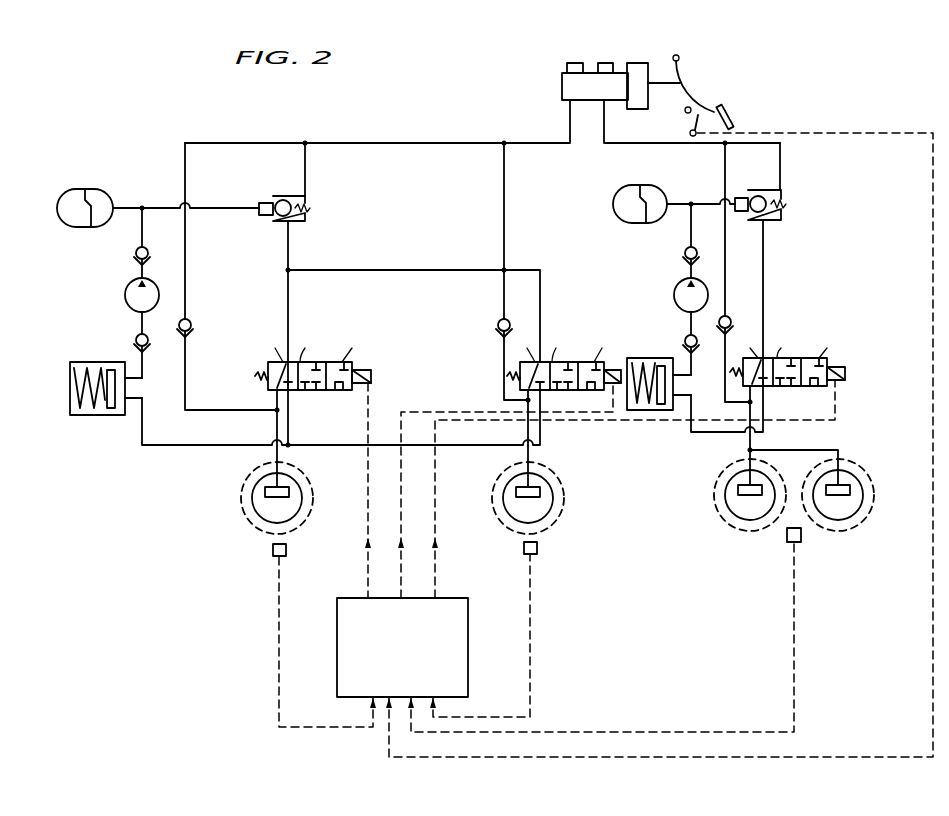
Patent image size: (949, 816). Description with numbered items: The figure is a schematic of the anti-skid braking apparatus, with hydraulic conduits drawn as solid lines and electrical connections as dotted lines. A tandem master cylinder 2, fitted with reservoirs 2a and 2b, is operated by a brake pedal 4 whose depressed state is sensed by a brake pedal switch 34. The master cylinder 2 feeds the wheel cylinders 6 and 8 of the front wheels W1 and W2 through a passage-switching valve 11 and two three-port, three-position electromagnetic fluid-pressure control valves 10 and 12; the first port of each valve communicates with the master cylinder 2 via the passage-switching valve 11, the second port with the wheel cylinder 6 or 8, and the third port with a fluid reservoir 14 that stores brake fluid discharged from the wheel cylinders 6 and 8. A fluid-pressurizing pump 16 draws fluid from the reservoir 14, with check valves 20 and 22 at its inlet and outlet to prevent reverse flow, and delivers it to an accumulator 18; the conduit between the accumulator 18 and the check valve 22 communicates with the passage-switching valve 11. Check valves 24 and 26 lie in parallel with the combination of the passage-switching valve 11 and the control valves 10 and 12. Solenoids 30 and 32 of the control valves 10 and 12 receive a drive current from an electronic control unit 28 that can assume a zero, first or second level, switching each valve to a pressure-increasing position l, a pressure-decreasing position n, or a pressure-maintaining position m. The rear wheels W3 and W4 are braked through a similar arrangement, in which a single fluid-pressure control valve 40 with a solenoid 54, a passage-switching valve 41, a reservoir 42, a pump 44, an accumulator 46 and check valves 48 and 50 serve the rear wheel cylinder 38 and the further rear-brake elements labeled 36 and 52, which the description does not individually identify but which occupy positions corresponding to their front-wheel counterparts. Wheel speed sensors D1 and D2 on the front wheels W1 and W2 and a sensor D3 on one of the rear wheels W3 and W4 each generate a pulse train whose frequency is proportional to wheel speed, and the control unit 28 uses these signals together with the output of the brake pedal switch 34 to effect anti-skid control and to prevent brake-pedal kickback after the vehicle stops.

The master cylinder 2 is at (592, 60).
The reservoir 2a is at (562, 68).
The reservoir 2b is at (608, 63).
The brake pedal 4 is at (735, 108).
The wheel cylinder 6 is at (290, 492).
The wheel cylinder 8 is at (550, 478).
The fluid-pressure control valve 10 is at (333, 348).
The passage-switching valve 11 is at (309, 208).
The fluid-pressure control valve 12 is at (577, 348).
The fluid reservoir 14 is at (102, 416).
The fluid-pressurizing pump 16 is at (125, 296).
The accumulator 18 is at (73, 189).
The check valve 20 is at (136, 340).
The check valve 22 is at (135, 253).
The check valve 24 is at (190, 322).
The check valve 26 is at (500, 320).
The electronic control unit 28 is at (337, 648).
The solenoid 30 is at (372, 376).
The solenoid 32 is at (613, 368).
The brake pedal switch 34 is at (686, 115).
The wheel cylinder 36 is at (740, 487).
The wheel cylinder 38 is at (850, 478).
The fluid-pressure control valve 40 is at (802, 344).
The passage-switching valve 41 is at (786, 210).
The reservoir 42 is at (650, 412).
The fluid-pressurizing pump 44 is at (675, 296).
The accumulator 46 is at (618, 198).
The check valve 48 is at (684, 250).
The check valve 50 is at (685, 341).
The check valve 52 is at (730, 318).
The solenoid 54 is at (836, 360).
The front wheel W1 is at (248, 505).
The front wheel W2 is at (548, 525).
The rear wheel W3 is at (715, 510).
The rear wheel W4 is at (866, 510).
The wheel speed sensor D1 is at (272, 550).
The wheel speed sensor D2 is at (524, 548).
The wheel speed sensor D3 is at (787, 540).